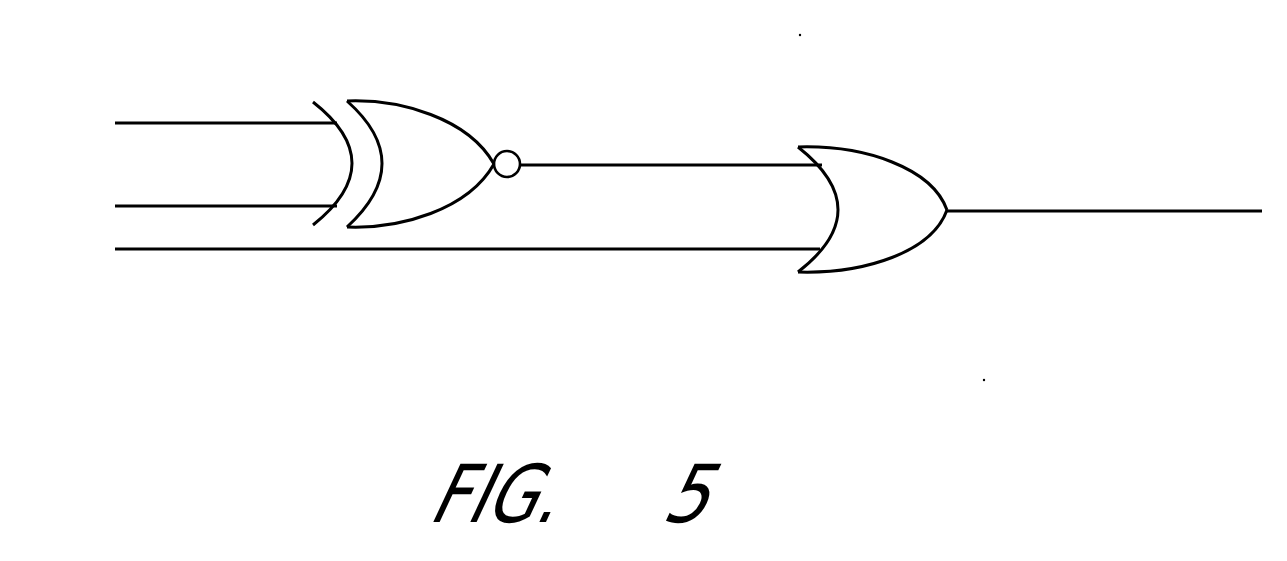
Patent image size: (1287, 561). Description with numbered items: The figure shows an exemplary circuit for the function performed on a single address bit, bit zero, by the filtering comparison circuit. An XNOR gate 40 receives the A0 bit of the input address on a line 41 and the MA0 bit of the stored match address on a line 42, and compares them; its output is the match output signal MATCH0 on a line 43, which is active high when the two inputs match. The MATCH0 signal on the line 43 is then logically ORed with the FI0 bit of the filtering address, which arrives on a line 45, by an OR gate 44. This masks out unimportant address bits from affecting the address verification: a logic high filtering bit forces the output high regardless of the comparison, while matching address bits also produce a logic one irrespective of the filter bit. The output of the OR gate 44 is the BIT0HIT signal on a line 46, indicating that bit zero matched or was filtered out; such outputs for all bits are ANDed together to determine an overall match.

The XNOR gate 40 is at (423, 163).
The line 41 is at (227, 123).
The line 42 is at (222, 205).
The line 43 is at (777, 163).
The OR gate 44 is at (888, 188).
The line 45 is at (258, 250).
The line 46 is at (1165, 211).